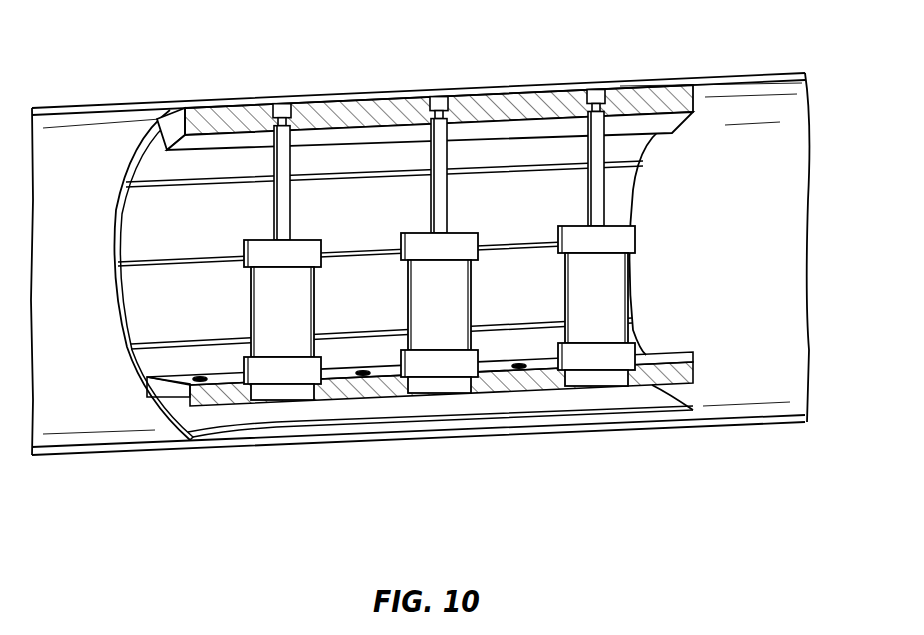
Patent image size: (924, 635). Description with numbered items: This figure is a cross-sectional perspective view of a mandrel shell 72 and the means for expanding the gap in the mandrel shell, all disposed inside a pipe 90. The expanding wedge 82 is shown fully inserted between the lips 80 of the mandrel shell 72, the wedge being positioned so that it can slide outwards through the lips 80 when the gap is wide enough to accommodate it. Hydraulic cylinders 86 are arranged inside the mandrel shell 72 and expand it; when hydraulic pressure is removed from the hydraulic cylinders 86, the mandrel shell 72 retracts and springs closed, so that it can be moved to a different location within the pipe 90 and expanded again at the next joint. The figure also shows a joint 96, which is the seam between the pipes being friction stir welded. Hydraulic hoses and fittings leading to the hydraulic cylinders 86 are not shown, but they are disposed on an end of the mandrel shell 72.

The mandrel shell 72 is at (152, 128).
The lips 80 is at (167, 132).
The expanding wedge 82 is at (212, 118).
The hydraulic cylinders 86 is at (590, 347).
The pipe 90 is at (88, 106).
The joint 96 is at (420, 261).